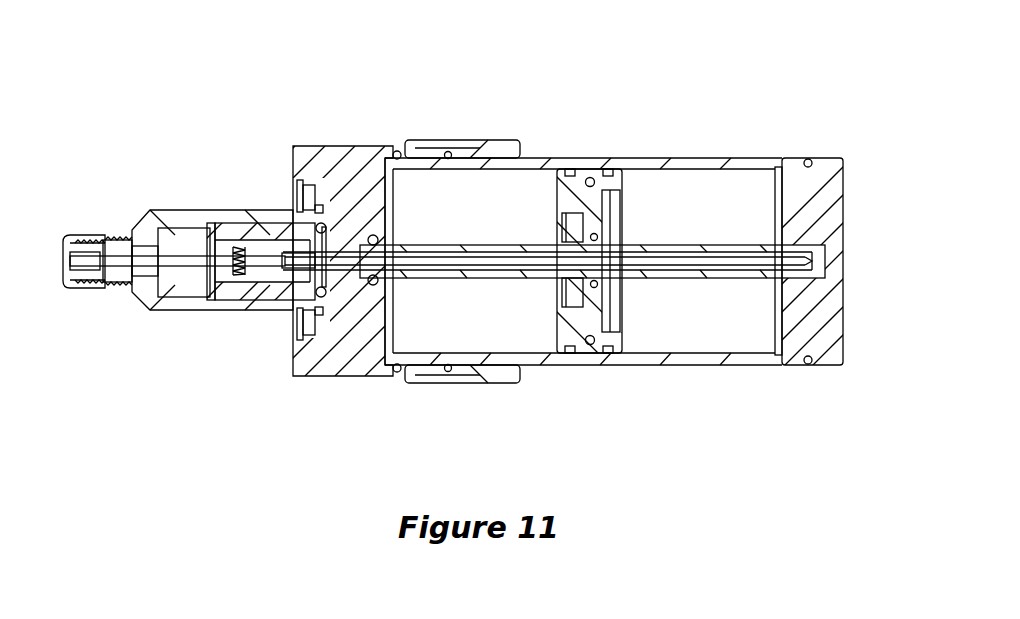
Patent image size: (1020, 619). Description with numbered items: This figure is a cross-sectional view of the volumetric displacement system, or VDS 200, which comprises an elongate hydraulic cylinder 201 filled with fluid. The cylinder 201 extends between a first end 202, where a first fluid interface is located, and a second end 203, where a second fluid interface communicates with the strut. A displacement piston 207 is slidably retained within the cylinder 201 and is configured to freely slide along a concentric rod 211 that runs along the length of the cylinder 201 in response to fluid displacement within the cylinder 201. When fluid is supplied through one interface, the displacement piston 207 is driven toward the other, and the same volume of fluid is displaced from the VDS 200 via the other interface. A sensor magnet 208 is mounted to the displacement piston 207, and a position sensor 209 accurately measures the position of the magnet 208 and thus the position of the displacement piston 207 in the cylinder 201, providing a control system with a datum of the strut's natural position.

The volumetric displacement system 200 is at (672, 113).
The hydraulic cylinder 201 is at (735, 165).
The first end 202 is at (848, 200).
The second end 203 is at (312, 127).
The displacement piston 207 is at (575, 185).
The sensor magnet 208 is at (617, 303).
The position sensor 209 is at (262, 252).
The concentric rod 211 is at (683, 262).